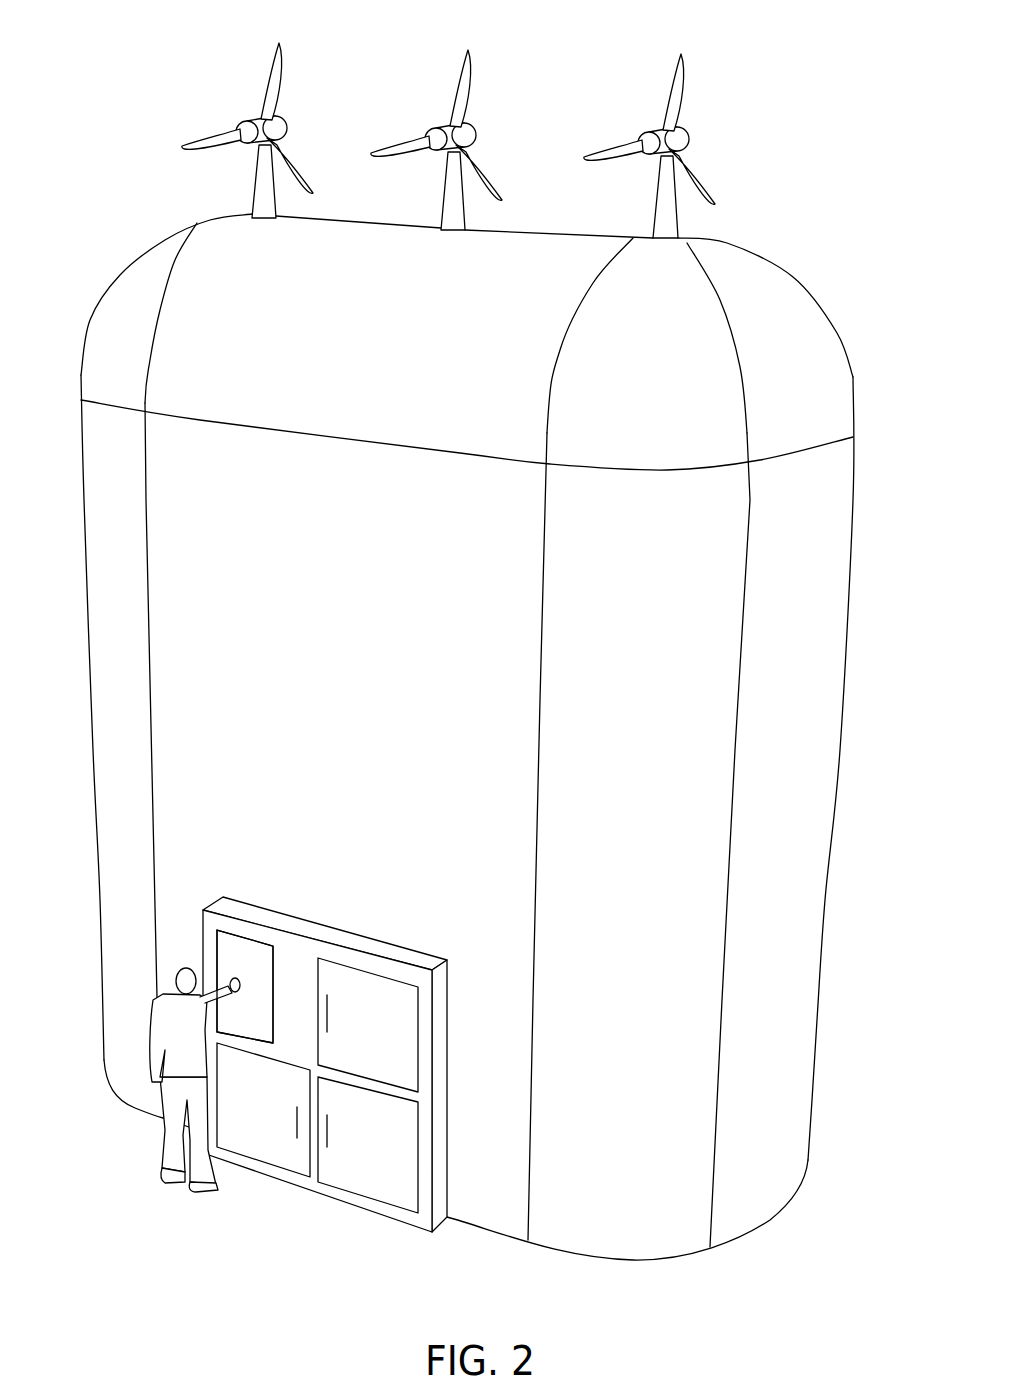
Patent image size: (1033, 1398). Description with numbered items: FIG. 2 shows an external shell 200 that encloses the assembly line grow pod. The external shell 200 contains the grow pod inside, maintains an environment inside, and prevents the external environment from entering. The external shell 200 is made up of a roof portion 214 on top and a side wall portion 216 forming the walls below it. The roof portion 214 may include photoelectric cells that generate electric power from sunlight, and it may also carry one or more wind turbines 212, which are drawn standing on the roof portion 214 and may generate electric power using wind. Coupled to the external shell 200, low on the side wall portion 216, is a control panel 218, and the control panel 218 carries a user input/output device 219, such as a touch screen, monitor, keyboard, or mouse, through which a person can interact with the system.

The external shell 200 is at (485, 659).
The wind turbines 212 is at (655, 106).
The roof portion 214 is at (842, 333).
The side wall portion 216 is at (822, 977).
The control panel 218 is at (461, 1204).
The user input/output device 219 is at (222, 957).